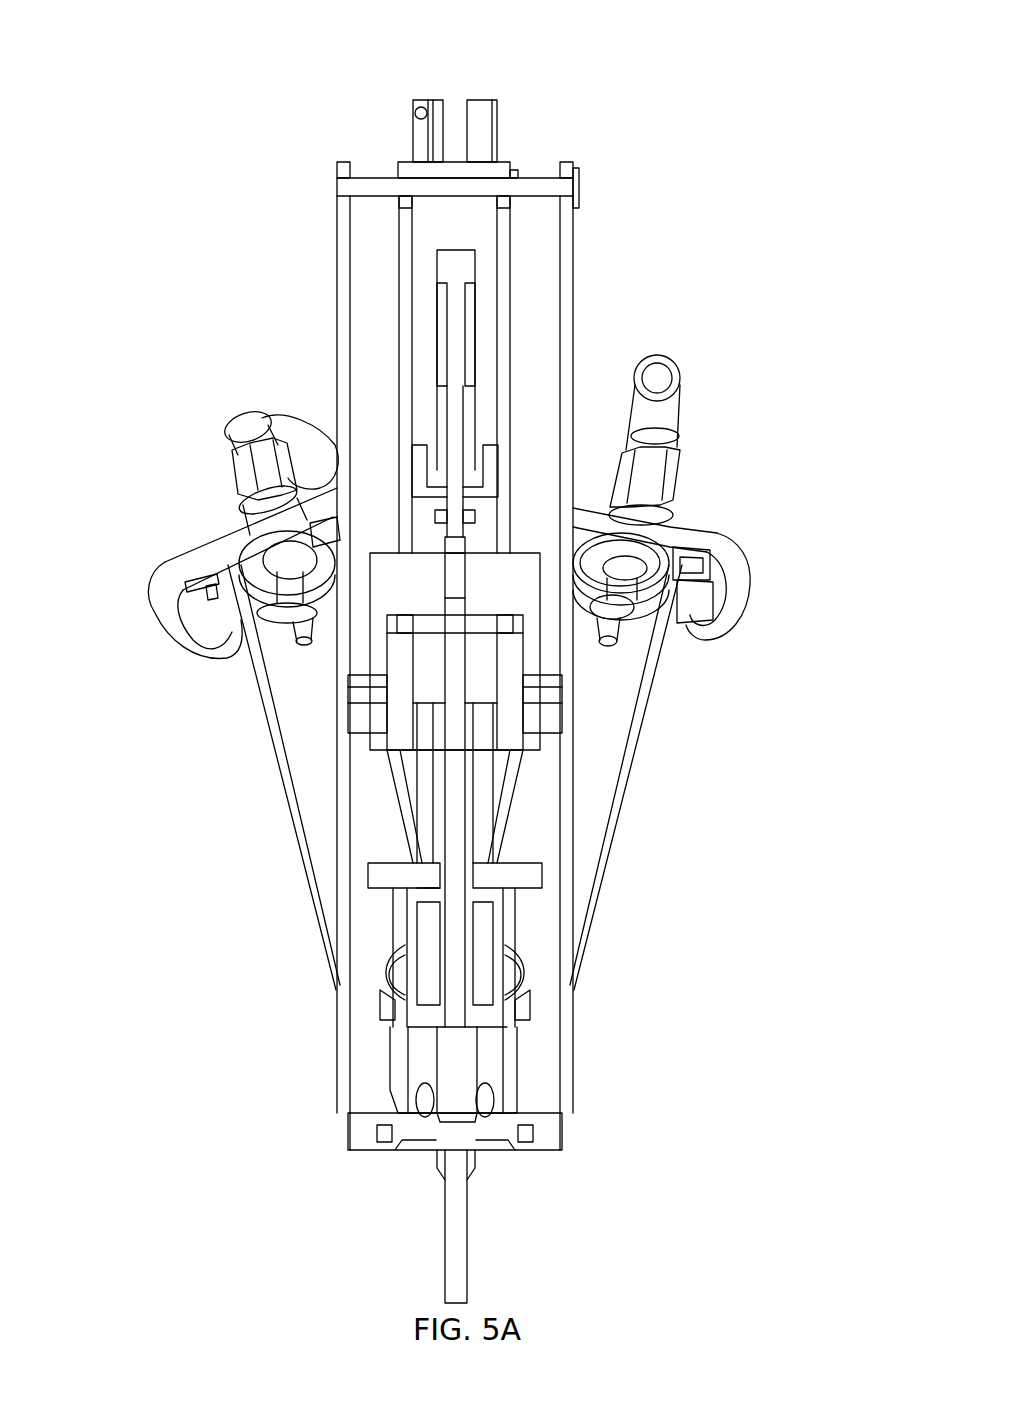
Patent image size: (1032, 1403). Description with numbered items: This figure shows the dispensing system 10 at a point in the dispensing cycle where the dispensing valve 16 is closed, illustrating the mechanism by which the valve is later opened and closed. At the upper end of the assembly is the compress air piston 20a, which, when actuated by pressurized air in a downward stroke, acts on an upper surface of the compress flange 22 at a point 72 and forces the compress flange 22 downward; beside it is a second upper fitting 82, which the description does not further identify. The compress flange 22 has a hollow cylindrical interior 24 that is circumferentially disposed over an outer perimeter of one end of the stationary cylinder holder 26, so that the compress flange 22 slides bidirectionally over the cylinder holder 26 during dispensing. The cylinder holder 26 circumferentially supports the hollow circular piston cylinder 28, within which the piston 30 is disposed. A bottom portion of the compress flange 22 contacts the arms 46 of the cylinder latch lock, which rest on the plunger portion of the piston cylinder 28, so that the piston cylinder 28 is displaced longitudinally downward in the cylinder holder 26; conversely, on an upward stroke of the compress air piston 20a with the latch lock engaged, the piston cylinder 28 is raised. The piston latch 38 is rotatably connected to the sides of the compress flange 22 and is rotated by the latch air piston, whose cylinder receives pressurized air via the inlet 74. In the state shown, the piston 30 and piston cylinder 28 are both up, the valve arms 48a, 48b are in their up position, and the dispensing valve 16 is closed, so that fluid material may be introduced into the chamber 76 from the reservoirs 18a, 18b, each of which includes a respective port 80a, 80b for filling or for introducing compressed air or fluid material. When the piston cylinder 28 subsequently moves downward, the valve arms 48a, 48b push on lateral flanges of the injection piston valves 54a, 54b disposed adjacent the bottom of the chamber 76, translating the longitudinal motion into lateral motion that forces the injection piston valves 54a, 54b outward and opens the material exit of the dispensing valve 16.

The dispensing system 10 is at (636, 113).
The dispensing valve 16 is at (433, 1186).
The reservoir 18a is at (605, 780).
The reservoir 18b is at (275, 677).
The compress air piston 20a is at (455, 290).
The compress flange 22 is at (505, 693).
The hollow cylindrical interior 24 is at (475, 667).
The cylinder holder 26 is at (482, 833).
The piston cylinder 28 is at (435, 975).
The piston 30 is at (453, 773).
The piston latch 38 is at (522, 500).
The arms 46 is at (375, 878).
The valve arm 48a is at (505, 935).
The valve arm 48b is at (378, 920).
The injection piston valve 54a is at (488, 1155).
The injection piston valve 54b is at (413, 1152).
The point 72 is at (457, 537).
The inlet 74 is at (477, 100).
The chamber 76 is at (455, 1072).
The port 80a is at (672, 365).
The port 80b is at (250, 415).
The inlet tube 82 is at (432, 100).